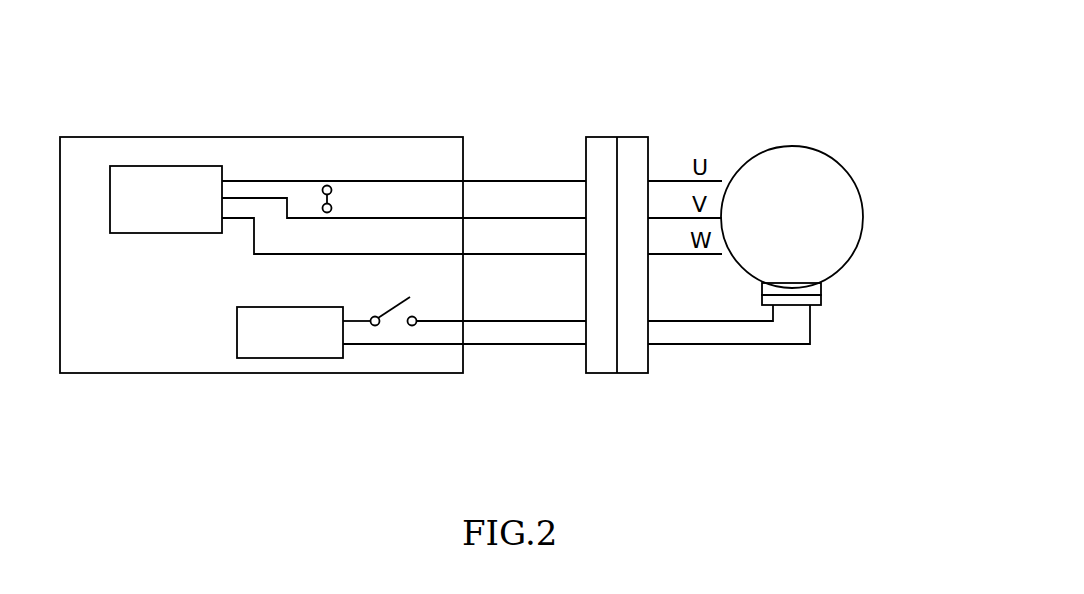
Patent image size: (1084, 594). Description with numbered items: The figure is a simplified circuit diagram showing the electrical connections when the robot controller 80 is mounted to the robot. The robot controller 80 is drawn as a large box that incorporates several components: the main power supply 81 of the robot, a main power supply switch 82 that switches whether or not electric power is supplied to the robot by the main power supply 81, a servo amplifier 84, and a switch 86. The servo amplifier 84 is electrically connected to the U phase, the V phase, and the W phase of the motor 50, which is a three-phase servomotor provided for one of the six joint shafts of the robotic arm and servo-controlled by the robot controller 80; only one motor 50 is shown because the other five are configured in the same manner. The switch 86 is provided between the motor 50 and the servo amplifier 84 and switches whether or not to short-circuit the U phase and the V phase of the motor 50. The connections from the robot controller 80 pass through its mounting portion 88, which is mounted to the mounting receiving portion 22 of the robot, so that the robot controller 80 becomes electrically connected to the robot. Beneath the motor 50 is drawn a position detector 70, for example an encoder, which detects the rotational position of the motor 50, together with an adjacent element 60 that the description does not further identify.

The robot controller 80 is at (278, 122).
The servo amplifier 84 is at (128, 234).
The switch 86 is at (332, 200).
The main power supply 81 is at (237, 331).
The main power supply switch 82 is at (394, 305).
The mounting portion 88 is at (603, 137).
The mounting receiving portion 22 is at (633, 365).
The motor 50 is at (864, 212).
The brake 60 is at (822, 285).
The position detector 70 is at (822, 298).